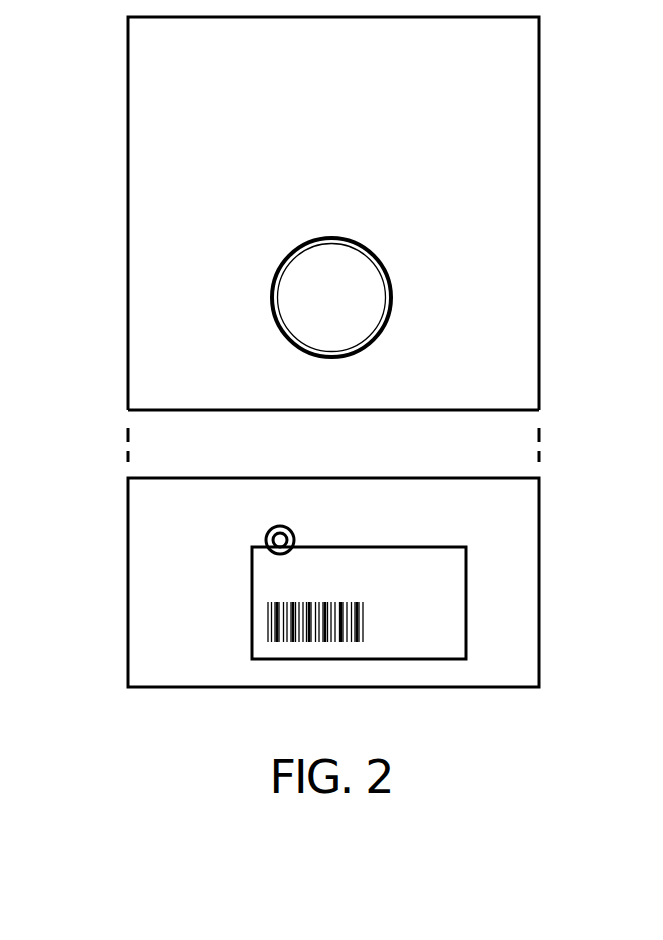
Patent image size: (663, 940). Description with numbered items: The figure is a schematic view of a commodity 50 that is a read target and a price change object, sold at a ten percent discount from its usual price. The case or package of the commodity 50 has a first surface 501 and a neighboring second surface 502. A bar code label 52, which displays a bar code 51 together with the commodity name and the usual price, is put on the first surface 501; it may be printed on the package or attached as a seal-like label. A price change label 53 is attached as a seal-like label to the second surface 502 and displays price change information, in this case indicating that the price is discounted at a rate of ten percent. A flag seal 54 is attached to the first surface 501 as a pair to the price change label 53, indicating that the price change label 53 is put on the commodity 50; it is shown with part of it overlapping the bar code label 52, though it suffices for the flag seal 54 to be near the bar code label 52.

The commodity 50 is at (311, 351).
The first surface 501 is at (541, 509).
The second surface 502 is at (541, 43).
The bar code 51 is at (262, 620).
The bar code label 52 is at (428, 547).
The price change label 53 is at (355, 241).
The flag seal 54 is at (288, 526).